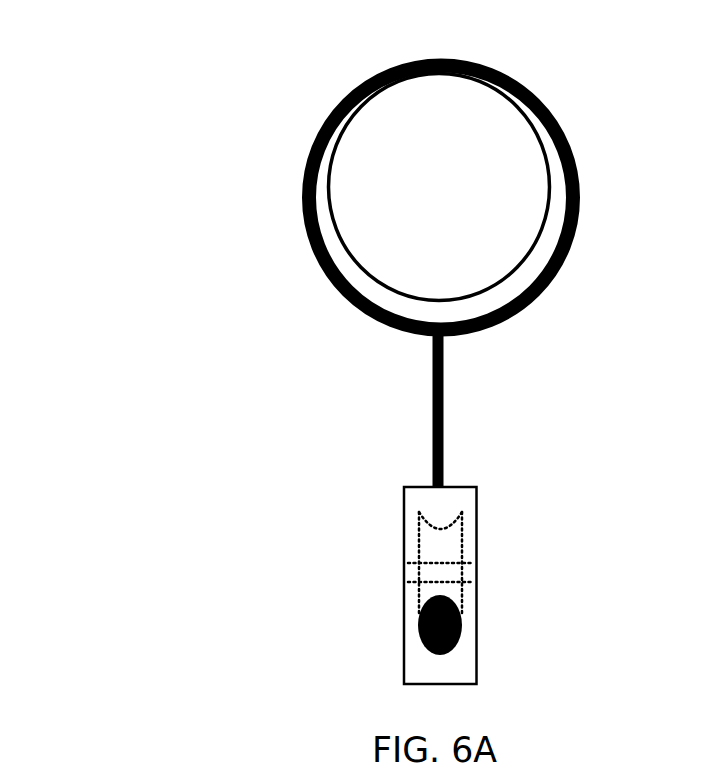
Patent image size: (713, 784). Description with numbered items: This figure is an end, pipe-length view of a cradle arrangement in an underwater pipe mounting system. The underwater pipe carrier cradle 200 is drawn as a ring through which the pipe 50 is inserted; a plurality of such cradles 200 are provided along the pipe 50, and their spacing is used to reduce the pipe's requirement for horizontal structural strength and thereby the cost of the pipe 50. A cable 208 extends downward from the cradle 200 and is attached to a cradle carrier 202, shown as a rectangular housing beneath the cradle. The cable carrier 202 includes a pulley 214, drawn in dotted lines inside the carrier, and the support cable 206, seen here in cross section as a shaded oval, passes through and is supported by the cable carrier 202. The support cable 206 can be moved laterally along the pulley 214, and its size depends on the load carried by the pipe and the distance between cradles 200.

The pipe 50 is at (338, 130).
The underwater pipe carrier cradle 200 is at (576, 192).
The cradle carrier 202 is at (477, 513).
The support cable 206 is at (421, 632).
The cable 208 is at (445, 404).
The pulley 214 is at (418, 557).